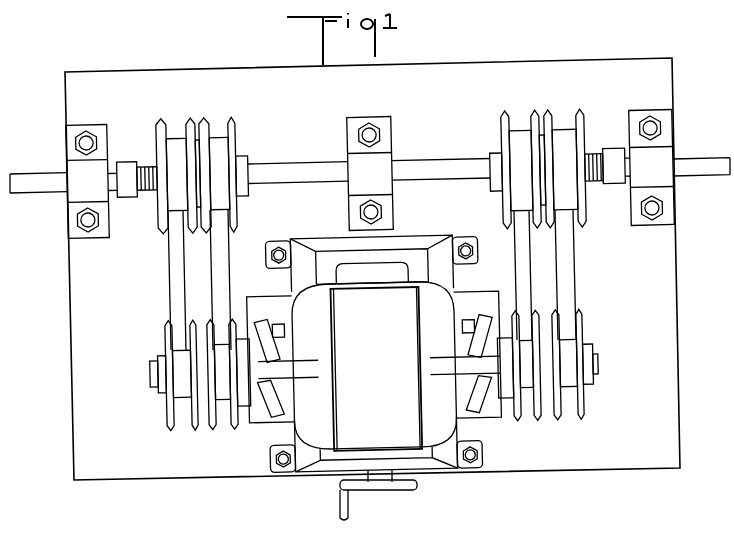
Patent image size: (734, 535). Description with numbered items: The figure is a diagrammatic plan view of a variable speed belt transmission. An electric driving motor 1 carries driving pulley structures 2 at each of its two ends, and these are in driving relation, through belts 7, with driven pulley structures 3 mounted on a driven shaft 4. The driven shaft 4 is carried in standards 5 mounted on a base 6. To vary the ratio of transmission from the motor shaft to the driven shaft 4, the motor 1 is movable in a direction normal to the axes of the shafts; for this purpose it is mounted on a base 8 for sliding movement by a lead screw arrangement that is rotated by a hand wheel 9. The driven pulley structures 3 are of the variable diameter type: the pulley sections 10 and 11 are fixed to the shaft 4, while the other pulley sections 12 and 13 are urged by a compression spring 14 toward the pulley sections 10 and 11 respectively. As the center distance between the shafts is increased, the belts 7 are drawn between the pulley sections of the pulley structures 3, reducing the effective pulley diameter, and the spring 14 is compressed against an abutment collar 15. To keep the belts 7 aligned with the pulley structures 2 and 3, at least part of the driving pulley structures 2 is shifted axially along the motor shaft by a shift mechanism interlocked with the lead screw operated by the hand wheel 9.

The electric driving motor 1 is at (302, 422).
The driving pulley structures 2 is at (212, 427).
The driven pulley structures 3 is at (375, 133).
The driven shaft 4 is at (700, 166).
The standards 5 is at (80, 236).
The base 6 is at (85, 395).
The belts 7 is at (213, 281).
The motor base 8 is at (342, 458).
The hand wheel 9 is at (358, 492).
The pulley section 10 is at (239, 137).
The pulley section 11 is at (192, 118).
The pulley section 12 is at (203, 118).
The pulley section 13 is at (158, 133).
The compression spring 14 is at (143, 195).
The abutment collar 15 is at (126, 162).